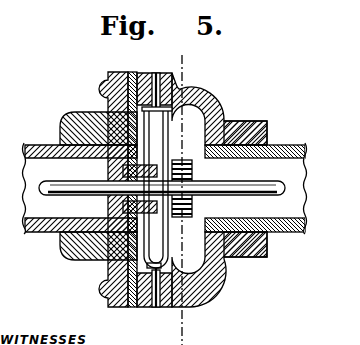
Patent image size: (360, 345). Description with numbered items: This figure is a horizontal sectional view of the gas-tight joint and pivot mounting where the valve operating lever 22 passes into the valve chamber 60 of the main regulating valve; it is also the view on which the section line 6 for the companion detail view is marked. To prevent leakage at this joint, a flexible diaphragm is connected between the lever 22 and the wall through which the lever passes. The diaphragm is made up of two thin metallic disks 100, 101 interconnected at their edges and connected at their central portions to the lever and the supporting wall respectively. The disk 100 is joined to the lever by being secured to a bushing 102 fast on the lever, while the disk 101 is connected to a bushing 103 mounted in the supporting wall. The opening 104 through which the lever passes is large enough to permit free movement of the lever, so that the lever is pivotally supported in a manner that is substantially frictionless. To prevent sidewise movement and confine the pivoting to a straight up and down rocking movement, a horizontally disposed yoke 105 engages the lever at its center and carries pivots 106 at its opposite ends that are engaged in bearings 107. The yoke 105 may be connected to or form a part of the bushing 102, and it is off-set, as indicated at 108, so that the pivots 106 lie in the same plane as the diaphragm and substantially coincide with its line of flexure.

The section line 6— 6 is at (189, 194).
The pivoted lever 22 is at (258, 182).
The valve chamber 60 is at (294, 200).
The metallic disk 100 is at (212, 262).
The metallic disk 101 is at (110, 260).
The bushing 102 is at (220, 118).
The bushing 103 is at (62, 238).
The opening 104 is at (118, 179).
The yoke 105 is at (173, 240).
The pivots 106 is at (153, 73).
The bearings 107 is at (138, 72).
The off-set 108 is at (186, 95).